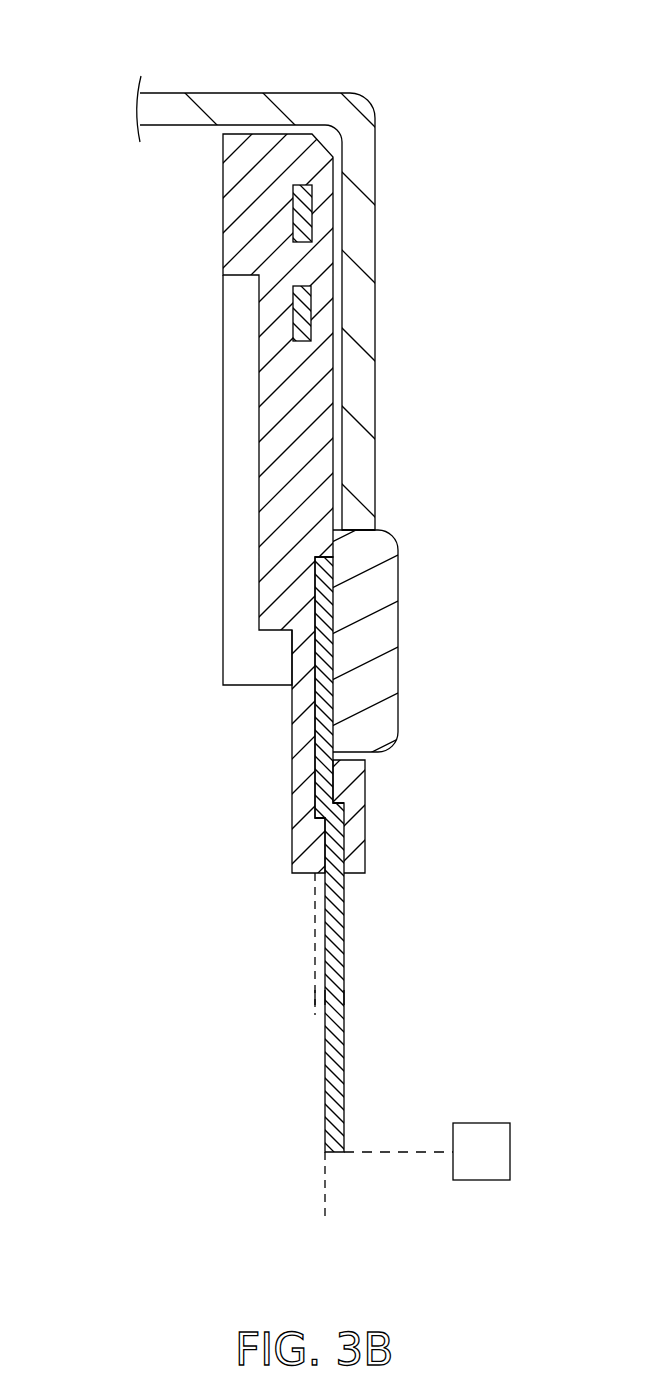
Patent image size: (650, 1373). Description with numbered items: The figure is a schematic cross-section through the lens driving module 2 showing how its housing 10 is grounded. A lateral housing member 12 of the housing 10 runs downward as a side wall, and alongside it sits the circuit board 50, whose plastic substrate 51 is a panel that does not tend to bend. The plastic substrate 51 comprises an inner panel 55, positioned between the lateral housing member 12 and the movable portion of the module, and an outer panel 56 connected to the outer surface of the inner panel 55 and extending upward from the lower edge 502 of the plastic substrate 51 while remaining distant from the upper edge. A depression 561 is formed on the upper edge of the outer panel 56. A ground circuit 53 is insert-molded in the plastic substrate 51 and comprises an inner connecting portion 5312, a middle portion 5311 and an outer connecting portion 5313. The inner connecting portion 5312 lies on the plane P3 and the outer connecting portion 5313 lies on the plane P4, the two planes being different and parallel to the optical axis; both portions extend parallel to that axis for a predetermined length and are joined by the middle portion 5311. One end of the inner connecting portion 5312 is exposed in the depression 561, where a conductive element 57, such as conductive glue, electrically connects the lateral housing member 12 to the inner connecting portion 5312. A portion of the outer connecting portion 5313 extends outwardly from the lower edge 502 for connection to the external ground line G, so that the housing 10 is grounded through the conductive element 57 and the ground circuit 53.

The lens driving module 2 is at (68, 52).
The housing 10 is at (375, 190).
The lateral housing member 12 is at (357, 225).
The circuit board 50 is at (325, 595).
The plastic substrate 51 is at (257, 225).
The ground circuit 53 is at (302, 882).
The inner panel 55 is at (320, 395).
The outer panel 56 is at (386, 795).
The conductive element 57 is at (368, 588).
The lower edge 502 is at (305, 875).
The depression 561 is at (347, 760).
The middle portion 5311 is at (340, 817).
The inner connecting portion 5312 is at (318, 588).
The outer connecting portion 5313 is at (336, 997).
The plane P3 is at (315, 997).
The plane P4 is at (325, 1195).
The external ground line G is at (483, 1123).